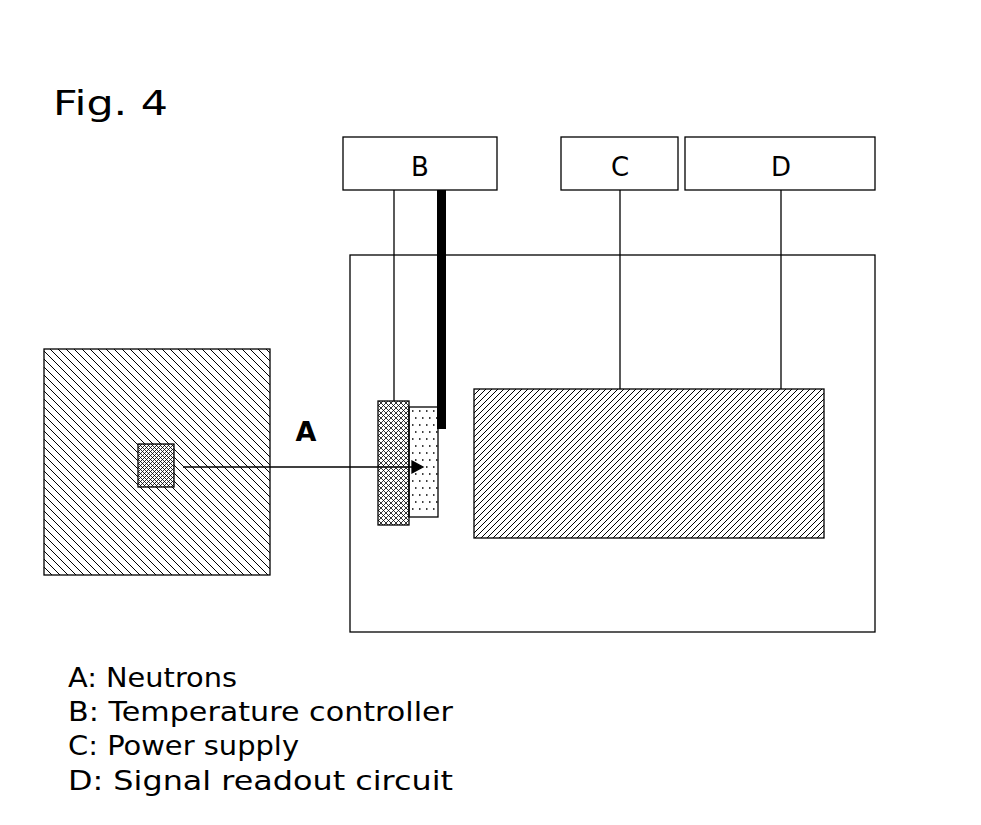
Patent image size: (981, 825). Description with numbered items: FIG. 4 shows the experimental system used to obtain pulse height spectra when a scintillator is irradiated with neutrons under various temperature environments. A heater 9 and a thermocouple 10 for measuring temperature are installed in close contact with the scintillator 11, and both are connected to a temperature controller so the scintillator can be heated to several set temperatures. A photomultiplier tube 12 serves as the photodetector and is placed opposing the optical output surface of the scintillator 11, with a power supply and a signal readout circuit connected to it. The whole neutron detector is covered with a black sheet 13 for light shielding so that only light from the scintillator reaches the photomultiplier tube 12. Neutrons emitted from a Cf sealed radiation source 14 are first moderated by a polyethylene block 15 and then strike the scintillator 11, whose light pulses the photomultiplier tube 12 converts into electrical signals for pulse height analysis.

The heater 9 is at (392, 513).
The thermocouple 10 is at (447, 365).
The scintillator 11 is at (423, 513).
The photomultiplier tube 12 is at (678, 502).
The black sheet 13 is at (348, 283).
The Cf sealed radiation source 14 is at (160, 462).
The polyethylene block 15 is at (80, 360).